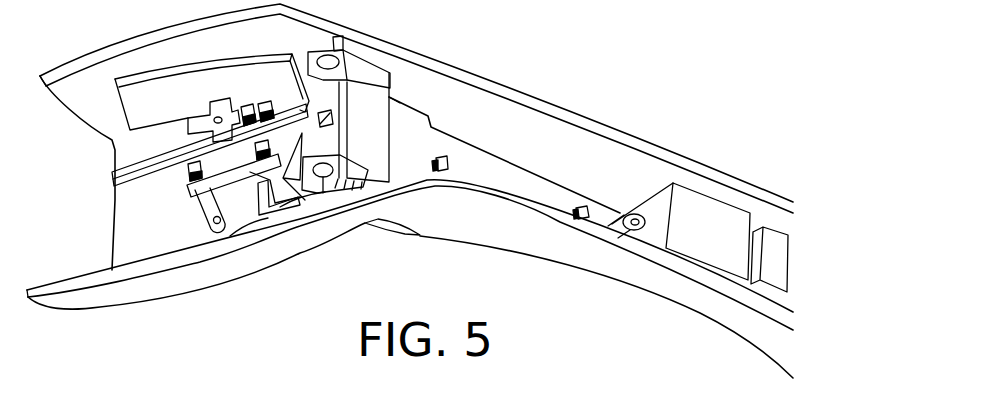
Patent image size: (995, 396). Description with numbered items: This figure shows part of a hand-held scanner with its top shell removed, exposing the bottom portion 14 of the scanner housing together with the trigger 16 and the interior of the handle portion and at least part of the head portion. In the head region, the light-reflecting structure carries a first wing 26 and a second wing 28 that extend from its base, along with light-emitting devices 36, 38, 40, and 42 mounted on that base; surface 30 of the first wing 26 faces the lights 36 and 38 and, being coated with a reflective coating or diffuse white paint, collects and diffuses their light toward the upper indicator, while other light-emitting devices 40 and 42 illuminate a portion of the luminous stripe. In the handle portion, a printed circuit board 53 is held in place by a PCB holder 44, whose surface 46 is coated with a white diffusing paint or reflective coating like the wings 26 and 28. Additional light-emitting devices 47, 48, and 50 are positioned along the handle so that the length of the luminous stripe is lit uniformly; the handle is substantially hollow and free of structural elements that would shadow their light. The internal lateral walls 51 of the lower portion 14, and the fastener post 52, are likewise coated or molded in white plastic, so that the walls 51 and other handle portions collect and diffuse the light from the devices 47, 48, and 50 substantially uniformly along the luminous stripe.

The bottom portion of scanner housing 14 is at (256, 262).
The trigger 16 is at (376, 234).
The first wing 26 is at (256, 61).
The second wing 28 is at (128, 175).
The surface of wing 30 is at (139, 104).
The light-emitting device 36 is at (258, 103).
The light-emitting device 38 is at (247, 106).
The light-emitting device 40 is at (254, 157).
The light-emitting device 42 is at (190, 177).
The PCB holder 44 is at (397, 80).
The surface of PCB holder 46 is at (358, 137).
The light-emitting device 47 is at (335, 151).
The light-emitting device 48 is at (438, 158).
The light-emitting device 50 is at (580, 208).
The internal lateral walls 51 is at (501, 144).
The fastener post 52 is at (634, 214).
The printed circuit board 53 is at (399, 113).